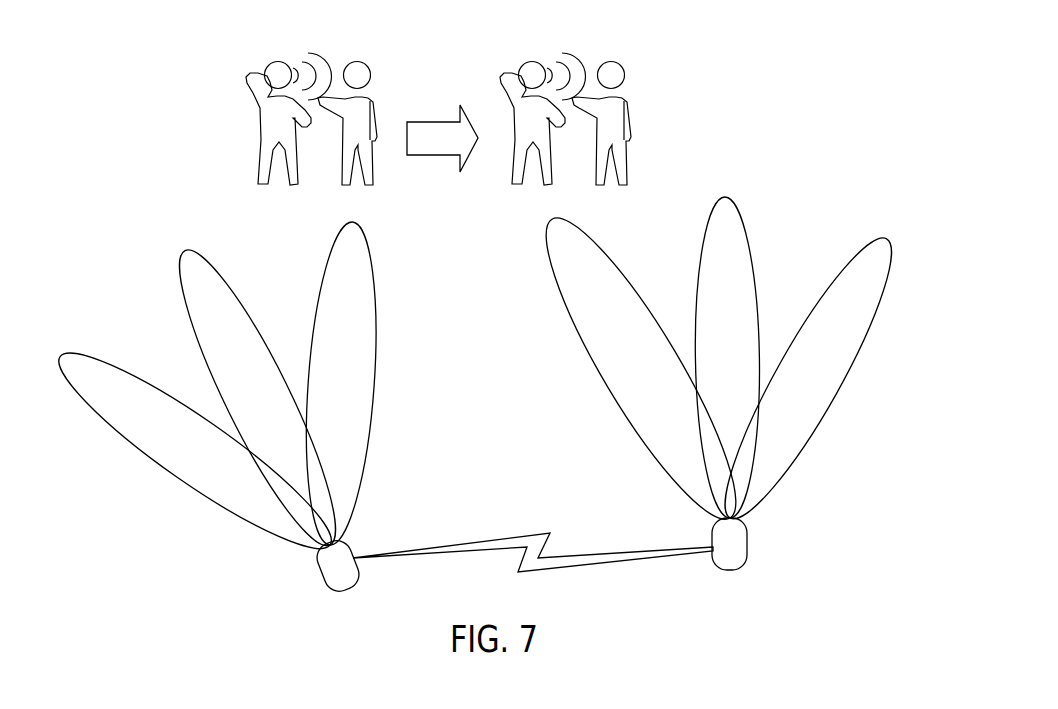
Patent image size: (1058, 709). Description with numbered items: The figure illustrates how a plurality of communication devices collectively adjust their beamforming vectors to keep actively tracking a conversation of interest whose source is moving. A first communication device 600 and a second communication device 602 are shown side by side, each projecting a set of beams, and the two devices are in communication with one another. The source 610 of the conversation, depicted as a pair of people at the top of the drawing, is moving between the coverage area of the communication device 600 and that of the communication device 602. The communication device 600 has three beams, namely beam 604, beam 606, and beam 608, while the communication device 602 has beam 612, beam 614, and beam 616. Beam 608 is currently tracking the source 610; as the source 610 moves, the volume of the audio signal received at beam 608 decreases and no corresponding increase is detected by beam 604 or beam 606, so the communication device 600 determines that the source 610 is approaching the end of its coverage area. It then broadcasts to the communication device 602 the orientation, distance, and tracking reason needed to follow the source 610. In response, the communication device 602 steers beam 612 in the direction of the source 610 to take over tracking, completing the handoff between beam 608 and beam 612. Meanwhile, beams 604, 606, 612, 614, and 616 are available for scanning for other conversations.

The communication device 600 is at (320, 572).
The communication device 602 is at (747, 545).
The beam 604 is at (178, 477).
The beam 606 is at (190, 313).
The beam 608 is at (372, 385).
The source 610 is at (291, 55).
The beam 612 is at (587, 337).
The beam 614 is at (752, 252).
The beam 616 is at (873, 318).